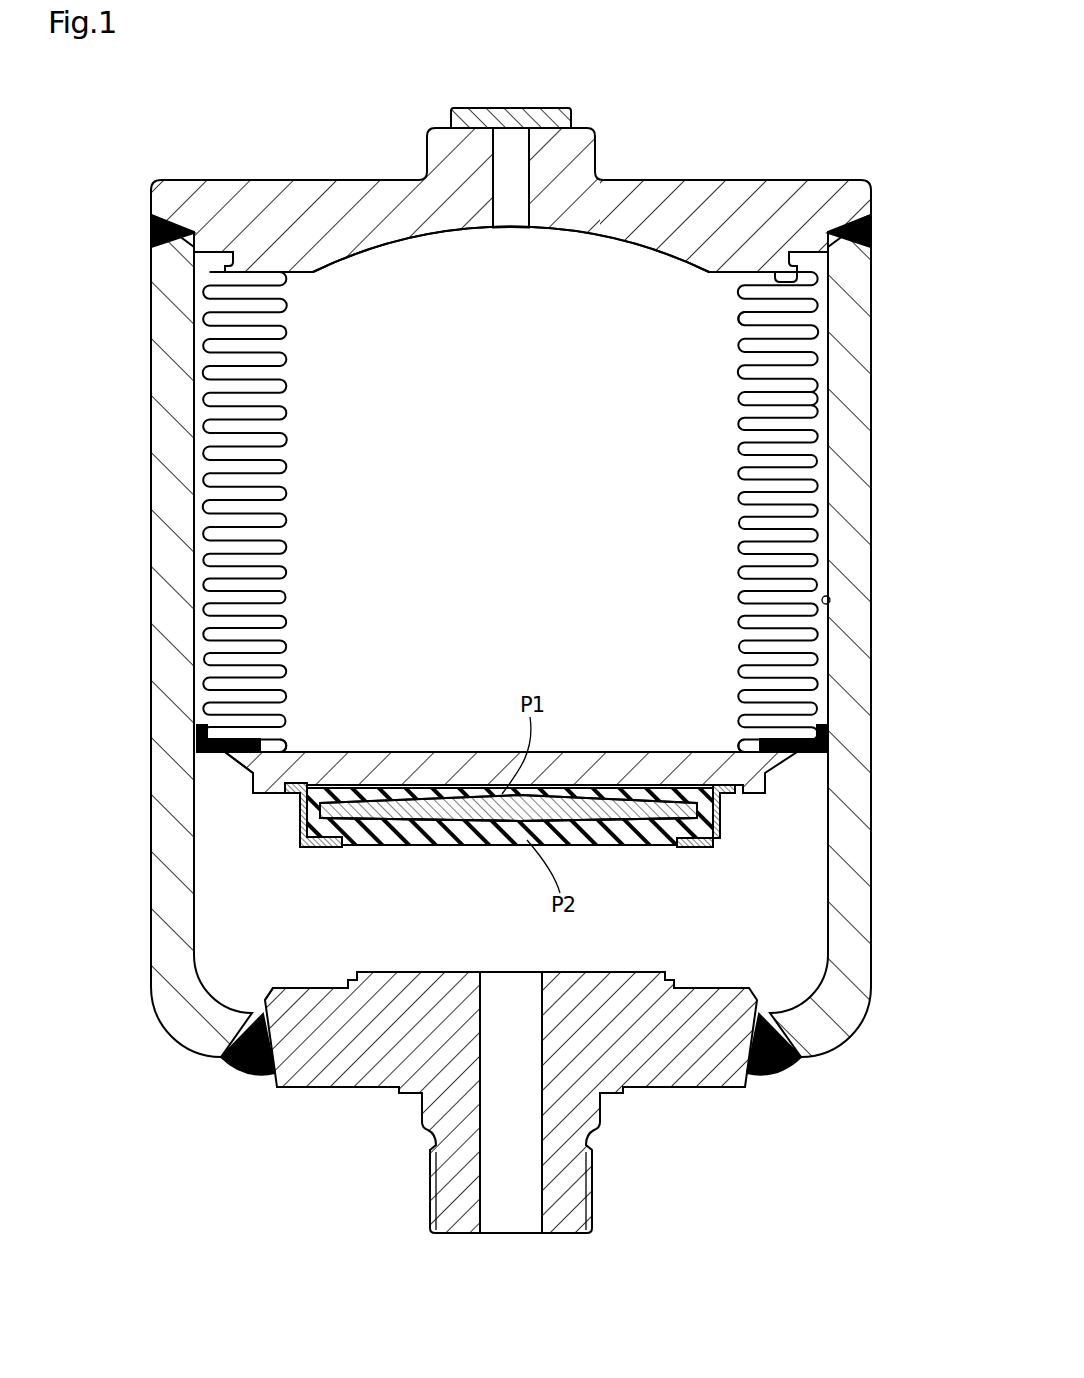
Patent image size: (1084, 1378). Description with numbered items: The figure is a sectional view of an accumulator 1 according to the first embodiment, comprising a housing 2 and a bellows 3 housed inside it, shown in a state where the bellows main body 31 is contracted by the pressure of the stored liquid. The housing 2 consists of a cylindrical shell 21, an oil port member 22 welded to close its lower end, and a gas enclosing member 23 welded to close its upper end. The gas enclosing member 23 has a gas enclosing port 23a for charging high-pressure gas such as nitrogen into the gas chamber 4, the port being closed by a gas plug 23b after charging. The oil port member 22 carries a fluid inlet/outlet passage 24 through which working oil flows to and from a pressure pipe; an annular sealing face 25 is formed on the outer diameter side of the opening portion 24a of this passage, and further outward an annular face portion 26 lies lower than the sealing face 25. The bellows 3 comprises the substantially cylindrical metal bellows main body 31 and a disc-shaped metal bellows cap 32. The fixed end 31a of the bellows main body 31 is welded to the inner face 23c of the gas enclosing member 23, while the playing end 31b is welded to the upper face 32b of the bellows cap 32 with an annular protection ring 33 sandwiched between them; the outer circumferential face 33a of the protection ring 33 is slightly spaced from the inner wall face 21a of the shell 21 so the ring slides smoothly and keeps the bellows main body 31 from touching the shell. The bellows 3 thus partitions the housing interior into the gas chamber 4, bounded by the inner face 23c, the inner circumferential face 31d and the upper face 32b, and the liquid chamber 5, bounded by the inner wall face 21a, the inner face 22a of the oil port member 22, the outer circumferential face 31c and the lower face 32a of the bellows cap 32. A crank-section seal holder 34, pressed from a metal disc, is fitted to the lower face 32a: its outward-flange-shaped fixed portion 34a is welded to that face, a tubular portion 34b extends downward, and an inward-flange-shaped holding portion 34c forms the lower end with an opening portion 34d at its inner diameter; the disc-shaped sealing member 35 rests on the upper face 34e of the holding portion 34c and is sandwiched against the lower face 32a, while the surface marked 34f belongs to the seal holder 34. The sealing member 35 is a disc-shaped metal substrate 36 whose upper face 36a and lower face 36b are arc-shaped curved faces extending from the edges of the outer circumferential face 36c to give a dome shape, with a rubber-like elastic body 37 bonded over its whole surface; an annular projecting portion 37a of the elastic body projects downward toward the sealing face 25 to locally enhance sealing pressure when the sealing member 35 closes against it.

The accumulator 1 is at (92, 722).
The housing 2 is at (150, 831).
The bellows 3 is at (192, 686).
The gas chamber 4 is at (403, 440).
The liquid chamber 5 is at (263, 940).
The shell 21 is at (873, 918).
The inner wall face 21a is at (831, 602).
The oil port member 22 is at (703, 1095).
The inner face 22a is at (315, 986).
The gas enclosing member 23 is at (812, 178).
The gas enclosing port 23a is at (528, 130).
The gas plug 23b is at (470, 108).
The inner face 23c is at (715, 272).
The fluid inlet/outlet passage 24 is at (511, 1208).
The opening portion 24a is at (543, 1016).
The sealing face 25 is at (636, 972).
The annular face portion 26 is at (704, 988).
The bellows main body 31 is at (834, 537).
The fixed end 31a is at (788, 283).
The playing end 31b is at (746, 744).
The outer circumferential face 31c is at (806, 403).
The inner circumferential face 31d is at (745, 316).
The bellows cap 32 is at (794, 776).
The lower face 32a is at (304, 790).
The upper face 32b is at (450, 752).
The protection ring 33 is at (836, 751).
The outer circumferential face 33a is at (828, 736).
The seal holder 34 is at (729, 841).
The fixed portion 34a is at (718, 788).
The tubular portion 34b is at (722, 794).
The holding portion 34c is at (700, 850).
The opening portion 34d is at (690, 846).
The upper face 34e is at (712, 848).
The outer cylindrical surface 34f is at (722, 846).
The sealing member 35 is at (526, 903).
The substrate 36 is at (486, 846).
The upper face 36a is at (340, 796).
The lower face 36b is at (386, 848).
The outer circumferential face 36c is at (302, 834).
The rubber-like elastic body 37 is at (498, 848).
The annular projecting portion 37a is at (450, 848).